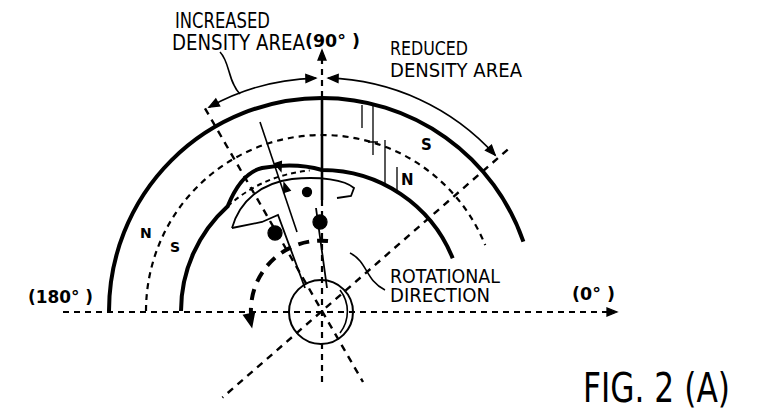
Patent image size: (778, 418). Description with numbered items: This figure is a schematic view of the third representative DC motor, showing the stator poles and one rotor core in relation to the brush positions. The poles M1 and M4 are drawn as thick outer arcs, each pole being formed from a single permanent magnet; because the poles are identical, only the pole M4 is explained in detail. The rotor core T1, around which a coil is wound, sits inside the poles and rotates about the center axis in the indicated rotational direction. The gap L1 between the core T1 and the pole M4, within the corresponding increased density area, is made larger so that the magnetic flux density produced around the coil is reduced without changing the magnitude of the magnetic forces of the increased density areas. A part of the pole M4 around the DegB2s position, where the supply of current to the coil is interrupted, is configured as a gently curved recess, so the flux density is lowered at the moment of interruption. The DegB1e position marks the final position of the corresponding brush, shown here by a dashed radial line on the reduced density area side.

The pole M1 is at (507, 200).
The pole M4 is at (125, 223).
The core T1 is at (337, 198).
The gap L1 is at (278, 176).
The final position of brush DegB1e is at (511, 144).
The initial position of brush DegB2s is at (192, 98).